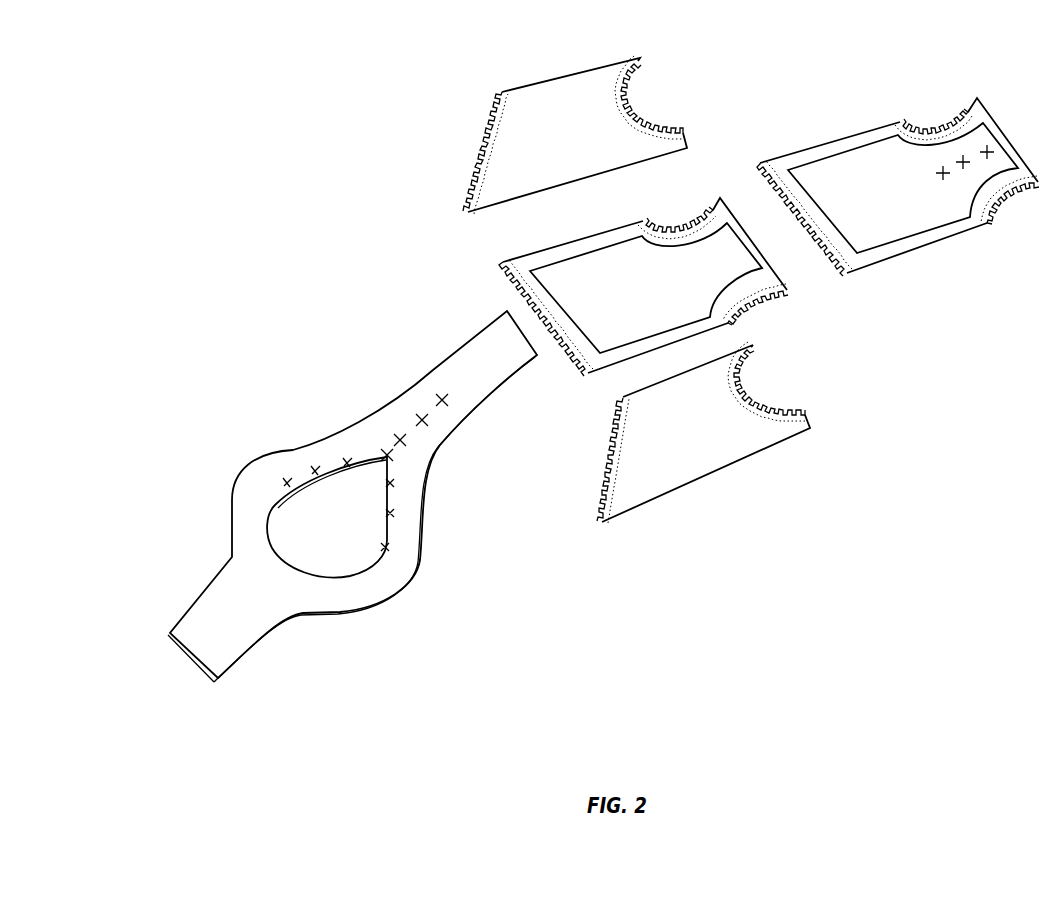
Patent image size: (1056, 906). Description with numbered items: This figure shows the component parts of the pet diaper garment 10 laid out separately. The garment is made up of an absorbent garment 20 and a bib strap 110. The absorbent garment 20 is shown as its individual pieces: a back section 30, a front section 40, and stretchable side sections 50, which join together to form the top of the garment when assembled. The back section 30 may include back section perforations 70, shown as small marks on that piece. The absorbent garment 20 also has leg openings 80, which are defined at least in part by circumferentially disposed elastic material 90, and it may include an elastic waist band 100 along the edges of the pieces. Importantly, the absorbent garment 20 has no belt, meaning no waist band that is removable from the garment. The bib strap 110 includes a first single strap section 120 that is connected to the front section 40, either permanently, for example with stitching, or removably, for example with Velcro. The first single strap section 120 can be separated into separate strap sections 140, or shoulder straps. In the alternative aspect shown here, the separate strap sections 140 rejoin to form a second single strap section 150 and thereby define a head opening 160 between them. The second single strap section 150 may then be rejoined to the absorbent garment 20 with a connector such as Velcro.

The pet diaper garment 10 is at (665, 593).
The absorbent garment 20 is at (818, 330).
The back section 30 is at (907, 220).
The front section 40 is at (550, 247).
The stretchable side sections 50 is at (555, 73).
The back section perforations 70 is at (967, 163).
The leg openings 80 is at (635, 80).
The elastic material 90 is at (652, 115).
The elastic waist band 100 is at (475, 147).
The bib strap 110 is at (352, 515).
The first single strap section 120 is at (488, 355).
The separate strap sections 140 is at (263, 487).
The second single strap section 150 is at (213, 647).
The head opening 160 is at (353, 535).